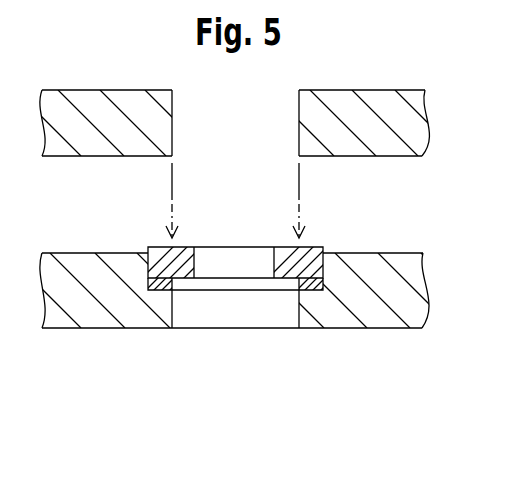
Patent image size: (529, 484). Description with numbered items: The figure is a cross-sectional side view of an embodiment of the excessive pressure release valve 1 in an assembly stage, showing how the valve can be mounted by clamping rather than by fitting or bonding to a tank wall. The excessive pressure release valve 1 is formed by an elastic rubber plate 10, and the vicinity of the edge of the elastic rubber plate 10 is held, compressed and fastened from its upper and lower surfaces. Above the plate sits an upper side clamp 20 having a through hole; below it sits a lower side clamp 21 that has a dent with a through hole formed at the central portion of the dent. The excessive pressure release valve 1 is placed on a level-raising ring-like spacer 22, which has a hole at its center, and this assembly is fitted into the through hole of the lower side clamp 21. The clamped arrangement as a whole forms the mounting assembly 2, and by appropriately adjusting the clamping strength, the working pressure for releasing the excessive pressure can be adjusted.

The excessive pressure release valve 1 is at (213, 291).
The panel fastening structure 2 is at (298, 383).
The elastic rubber plate 10 is at (160, 260).
The upper side clamp 20 is at (398, 112).
The lower side clamp 21 is at (395, 265).
The spacer 22 is at (165, 284).